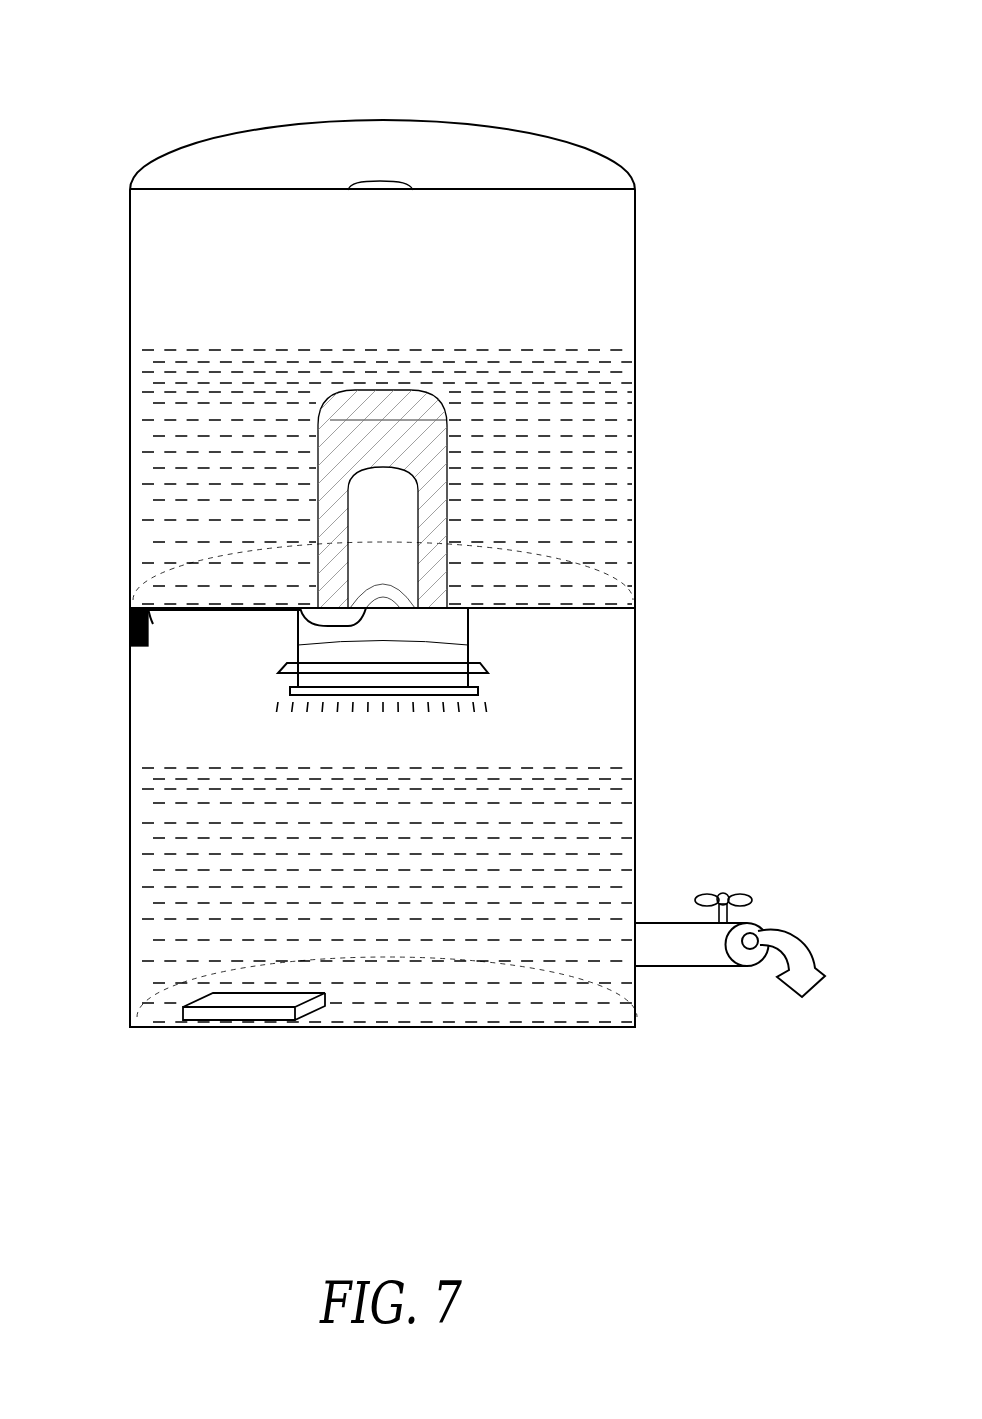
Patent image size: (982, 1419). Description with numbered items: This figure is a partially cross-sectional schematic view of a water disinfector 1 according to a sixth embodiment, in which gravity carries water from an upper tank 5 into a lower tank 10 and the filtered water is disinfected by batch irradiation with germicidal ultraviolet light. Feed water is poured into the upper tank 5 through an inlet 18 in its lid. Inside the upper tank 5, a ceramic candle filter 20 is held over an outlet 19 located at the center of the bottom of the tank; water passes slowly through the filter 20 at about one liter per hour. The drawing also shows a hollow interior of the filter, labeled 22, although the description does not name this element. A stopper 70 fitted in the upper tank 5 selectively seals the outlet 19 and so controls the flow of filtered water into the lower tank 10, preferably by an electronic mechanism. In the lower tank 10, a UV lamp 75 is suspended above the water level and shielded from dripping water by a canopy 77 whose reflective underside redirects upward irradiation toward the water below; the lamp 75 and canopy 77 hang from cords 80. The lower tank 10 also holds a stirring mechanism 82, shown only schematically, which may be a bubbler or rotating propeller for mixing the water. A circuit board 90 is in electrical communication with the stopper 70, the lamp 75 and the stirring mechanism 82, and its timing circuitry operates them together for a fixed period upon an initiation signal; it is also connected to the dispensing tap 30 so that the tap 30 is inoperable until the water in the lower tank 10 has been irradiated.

The water disinfector 1 is at (652, 45).
The upper tank 5 is at (647, 229).
The lower tank 10 is at (655, 655).
The inlet 18 is at (365, 182).
The outlet 19 is at (400, 606).
The ceramic candle filter 20 is at (447, 438).
The filter cavity 22 is at (418, 496).
The dispensing tap 30 is at (667, 967).
The stopper 70 is at (392, 603).
The UV lamp 75 is at (478, 690).
The canopy 77 is at (488, 668).
The cords 80 is at (298, 650).
The stirring mechanism 82 is at (262, 1010).
The circuit board 90 is at (130, 627).